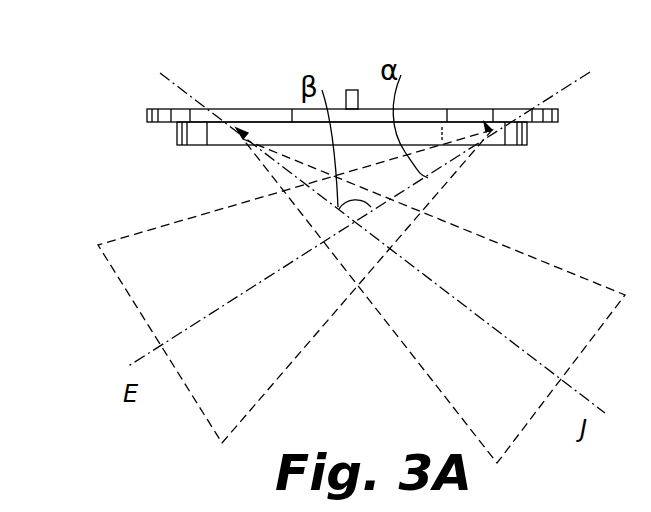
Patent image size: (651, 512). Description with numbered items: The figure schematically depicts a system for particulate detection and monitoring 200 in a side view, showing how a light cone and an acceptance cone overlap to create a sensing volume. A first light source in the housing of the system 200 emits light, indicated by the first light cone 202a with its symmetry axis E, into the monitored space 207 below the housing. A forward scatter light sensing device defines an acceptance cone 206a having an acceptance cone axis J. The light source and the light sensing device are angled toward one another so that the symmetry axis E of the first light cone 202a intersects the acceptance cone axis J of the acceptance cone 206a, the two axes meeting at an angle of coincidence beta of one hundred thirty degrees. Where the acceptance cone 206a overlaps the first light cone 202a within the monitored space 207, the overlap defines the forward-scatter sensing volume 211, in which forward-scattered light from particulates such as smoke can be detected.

The system for particulate detection and monitoring 200 is at (128, 113).
The first light cone 202a is at (182, 217).
The acceptance cone 206a is at (548, 262).
The forward-scatter sensing volume 211 is at (392, 222).
The monitored space 207 is at (650, 361).